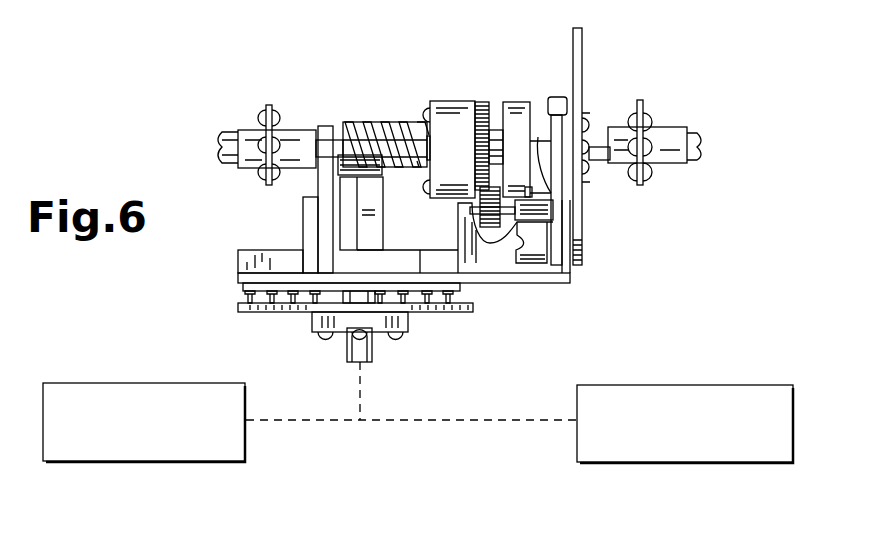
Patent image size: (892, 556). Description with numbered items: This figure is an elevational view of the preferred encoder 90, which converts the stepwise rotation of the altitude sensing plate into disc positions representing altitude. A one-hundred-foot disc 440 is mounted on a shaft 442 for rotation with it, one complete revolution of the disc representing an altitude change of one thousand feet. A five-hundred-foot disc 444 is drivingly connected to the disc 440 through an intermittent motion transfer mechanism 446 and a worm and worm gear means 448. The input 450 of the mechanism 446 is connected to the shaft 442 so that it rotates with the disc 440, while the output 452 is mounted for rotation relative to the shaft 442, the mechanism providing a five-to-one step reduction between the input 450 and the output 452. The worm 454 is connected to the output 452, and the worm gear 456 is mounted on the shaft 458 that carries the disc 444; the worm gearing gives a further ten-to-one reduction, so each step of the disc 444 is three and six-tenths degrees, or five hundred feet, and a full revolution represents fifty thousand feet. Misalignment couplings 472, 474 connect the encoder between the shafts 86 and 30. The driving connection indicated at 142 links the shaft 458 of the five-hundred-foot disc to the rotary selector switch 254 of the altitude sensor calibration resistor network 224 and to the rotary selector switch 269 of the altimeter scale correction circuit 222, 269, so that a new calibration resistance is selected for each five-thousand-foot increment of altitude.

The encoder 90 is at (383, 58).
The shaft 30 is at (225, 138).
The misalignment coupling 474 is at (250, 194).
The worm and worm gear means 448 is at (366, 113).
The worm 454 is at (390, 125).
The worm gear 456 is at (373, 173).
The output 452 is at (448, 118).
The intermittent motion transfer mechanism 446 is at (493, 93).
The input 450 is at (515, 106).
The 100 foot disc 440 is at (583, 43).
The shaft 442 is at (597, 133).
The misalignment coupling 472 is at (656, 107).
The shaft 86 is at (697, 141).
The 500 foot disc 444 is at (472, 309).
The shaft 458 is at (368, 348).
The driving connection 142 is at (362, 395).
The altimeter scale correction 222 is at (121, 381).
The rotary selector switch 269 is at (144, 422).
The resistor network 224 is at (668, 385).
The rotary selector switch 254 is at (685, 424).